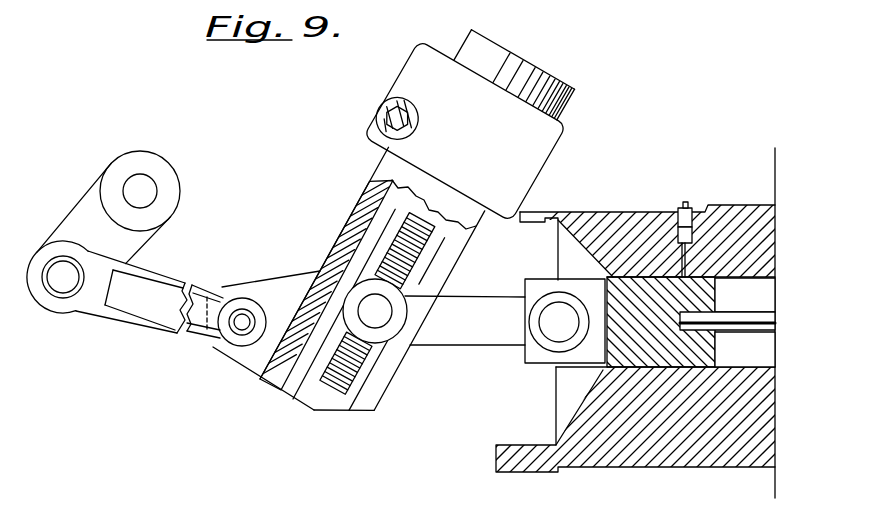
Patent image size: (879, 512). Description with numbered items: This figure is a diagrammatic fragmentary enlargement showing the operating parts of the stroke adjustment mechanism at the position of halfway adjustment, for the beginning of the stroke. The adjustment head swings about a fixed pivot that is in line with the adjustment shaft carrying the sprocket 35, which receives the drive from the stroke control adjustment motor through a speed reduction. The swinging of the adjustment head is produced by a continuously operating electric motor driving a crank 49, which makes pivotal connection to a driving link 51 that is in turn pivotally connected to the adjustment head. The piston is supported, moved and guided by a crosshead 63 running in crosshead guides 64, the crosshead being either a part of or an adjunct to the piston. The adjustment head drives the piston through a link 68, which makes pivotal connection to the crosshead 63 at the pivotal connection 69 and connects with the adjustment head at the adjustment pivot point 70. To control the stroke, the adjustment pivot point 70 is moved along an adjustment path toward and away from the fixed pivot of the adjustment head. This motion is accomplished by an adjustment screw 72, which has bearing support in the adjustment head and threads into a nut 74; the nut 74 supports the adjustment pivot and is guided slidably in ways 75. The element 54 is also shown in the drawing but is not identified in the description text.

The crank 49 is at (135, 238).
The driving link 51 is at (144, 312).
The ways 75 is at (290, 396).
The nut 74 is at (302, 400).
The adjustment screw 72 is at (334, 392).
The sprocket 35 is at (441, 251).
The adjustment pivot point 70 is at (375, 311).
The link 68 is at (460, 334).
The pivotal connection 69 is at (556, 331).
The slide 54 is at (742, 318).
The crosshead 63 is at (705, 360).
The crosshead guides 64 is at (764, 368).